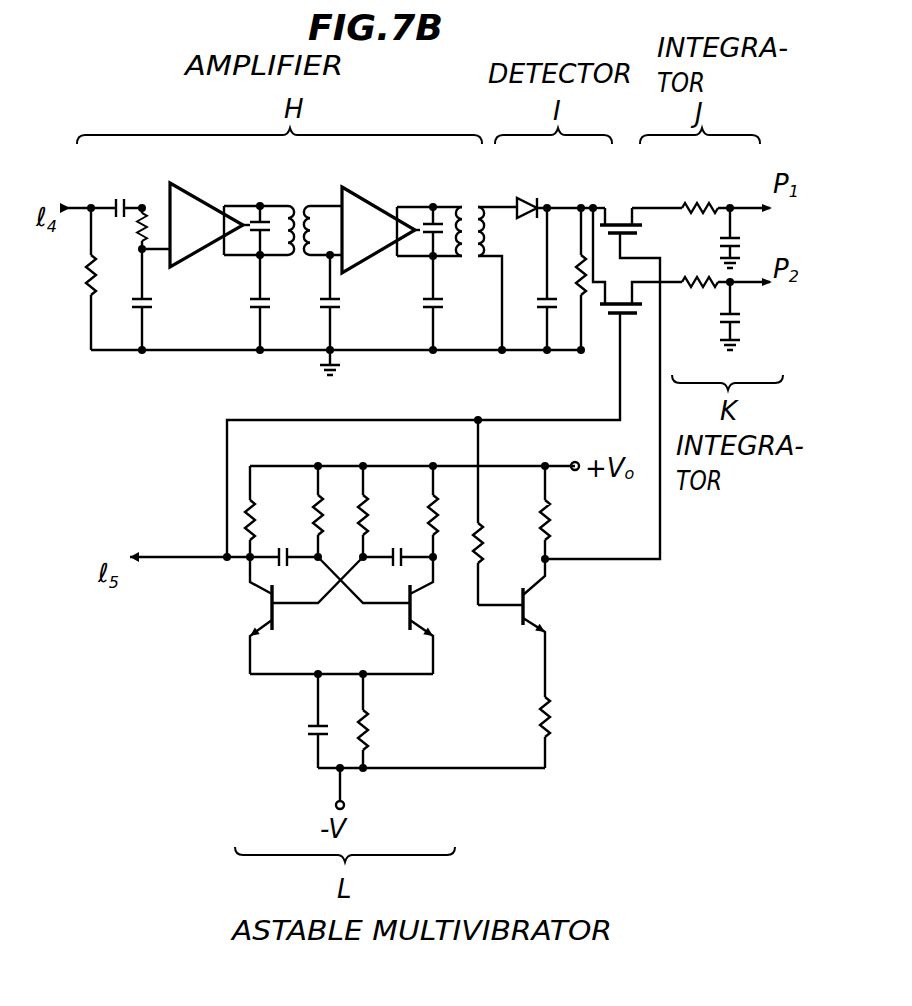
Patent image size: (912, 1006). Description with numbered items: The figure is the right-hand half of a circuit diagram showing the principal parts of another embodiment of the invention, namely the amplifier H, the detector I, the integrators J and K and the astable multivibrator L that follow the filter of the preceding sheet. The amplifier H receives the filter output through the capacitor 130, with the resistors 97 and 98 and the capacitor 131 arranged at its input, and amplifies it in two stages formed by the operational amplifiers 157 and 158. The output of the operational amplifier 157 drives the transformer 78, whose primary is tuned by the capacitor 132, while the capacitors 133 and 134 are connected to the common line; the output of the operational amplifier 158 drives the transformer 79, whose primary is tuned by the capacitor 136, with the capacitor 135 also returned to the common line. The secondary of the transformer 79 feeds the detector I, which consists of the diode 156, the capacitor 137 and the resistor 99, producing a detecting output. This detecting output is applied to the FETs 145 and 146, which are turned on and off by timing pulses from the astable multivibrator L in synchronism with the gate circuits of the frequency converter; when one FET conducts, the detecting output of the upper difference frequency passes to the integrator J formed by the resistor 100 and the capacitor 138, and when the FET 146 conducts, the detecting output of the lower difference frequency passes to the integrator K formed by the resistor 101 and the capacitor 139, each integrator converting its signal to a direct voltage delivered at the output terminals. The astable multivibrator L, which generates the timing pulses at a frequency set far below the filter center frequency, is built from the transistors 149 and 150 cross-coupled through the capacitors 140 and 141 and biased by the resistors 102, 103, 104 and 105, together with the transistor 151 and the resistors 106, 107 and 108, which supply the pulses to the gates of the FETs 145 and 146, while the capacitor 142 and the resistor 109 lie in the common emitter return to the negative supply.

The transformer 78 is at (305, 204).
The transformer 79 is at (478, 205).
The resistor 97 is at (90, 272).
The resistor 98 is at (139, 240).
The resistor 99 is at (580, 266).
The resistor 100 is at (700, 203).
The resistor 101 is at (700, 290).
The resistor 102 is at (256, 518).
The resistor 103 is at (315, 506).
The resistor 104 is at (368, 510).
The resistor 105 is at (440, 512).
The resistor 106 is at (484, 542).
The resistor 107 is at (552, 532).
The resistor 108 is at (552, 716).
The resistor 109 is at (372, 734).
The capacitor 130 is at (120, 198).
The capacitor 131 is at (152, 303).
The capacitor 132 is at (264, 204).
The capacitor 133 is at (270, 303).
The capacitor 134 is at (340, 303).
The capacitor 135 is at (440, 306).
The capacitor 136 is at (438, 206).
The capacitor 137 is at (546, 304).
The capacitor 138 is at (720, 242).
The capacitor 139 is at (740, 318).
The capacitor 140 is at (290, 566).
The capacitor 141 is at (396, 566).
The capacitor 142 is at (306, 728).
The FET 145 is at (620, 222).
The FET 146 is at (634, 316).
The transistor 149 is at (270, 609).
The transistor 150 is at (412, 626).
The transistor 151 is at (532, 610).
The diode 156 is at (528, 198).
The operational amplifier 157 is at (200, 198).
The operational amplifier 158 is at (372, 200).